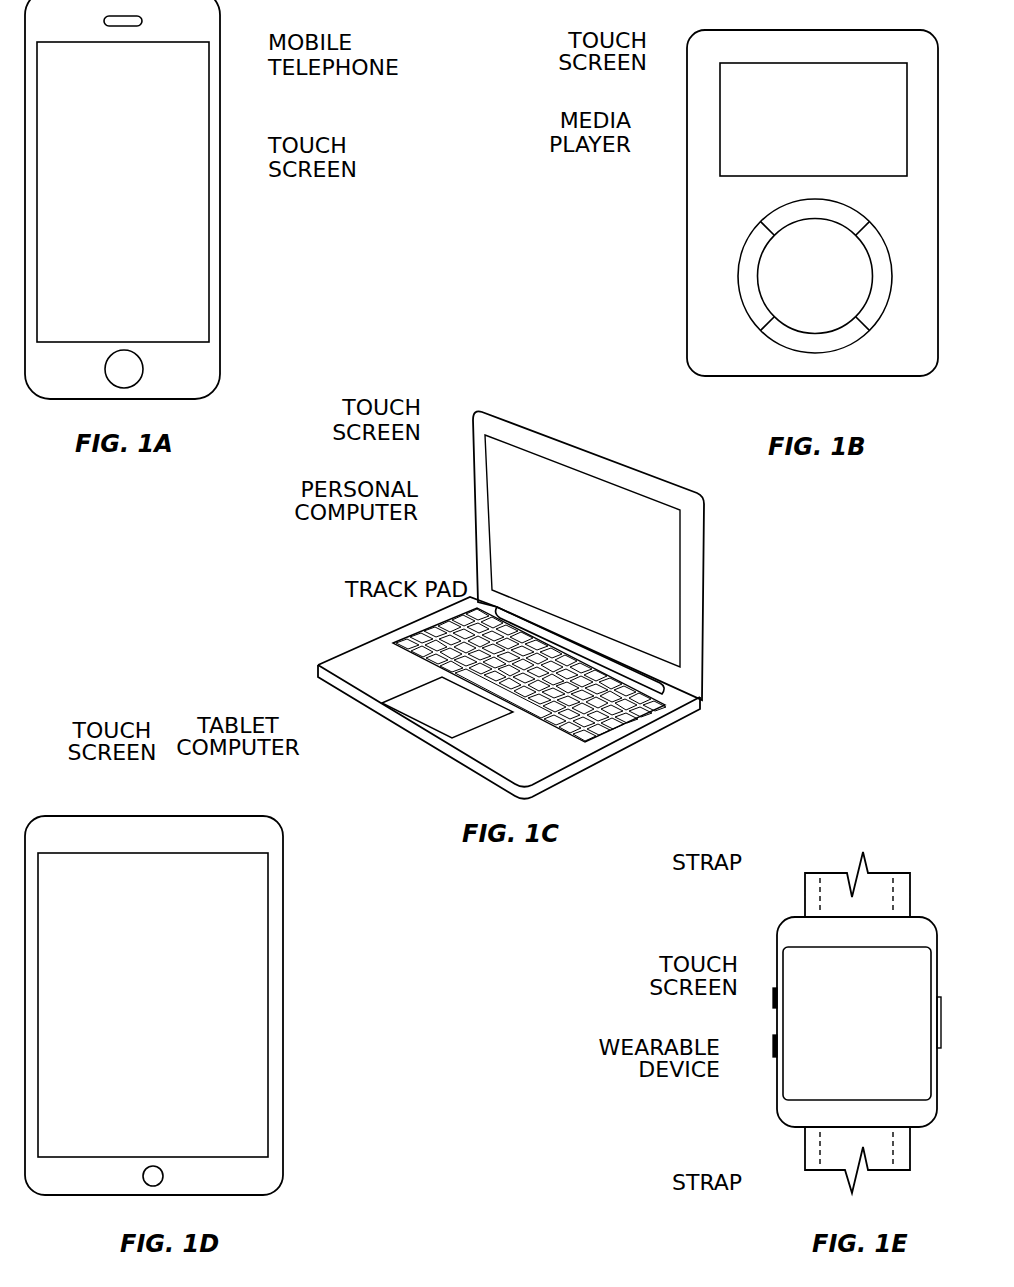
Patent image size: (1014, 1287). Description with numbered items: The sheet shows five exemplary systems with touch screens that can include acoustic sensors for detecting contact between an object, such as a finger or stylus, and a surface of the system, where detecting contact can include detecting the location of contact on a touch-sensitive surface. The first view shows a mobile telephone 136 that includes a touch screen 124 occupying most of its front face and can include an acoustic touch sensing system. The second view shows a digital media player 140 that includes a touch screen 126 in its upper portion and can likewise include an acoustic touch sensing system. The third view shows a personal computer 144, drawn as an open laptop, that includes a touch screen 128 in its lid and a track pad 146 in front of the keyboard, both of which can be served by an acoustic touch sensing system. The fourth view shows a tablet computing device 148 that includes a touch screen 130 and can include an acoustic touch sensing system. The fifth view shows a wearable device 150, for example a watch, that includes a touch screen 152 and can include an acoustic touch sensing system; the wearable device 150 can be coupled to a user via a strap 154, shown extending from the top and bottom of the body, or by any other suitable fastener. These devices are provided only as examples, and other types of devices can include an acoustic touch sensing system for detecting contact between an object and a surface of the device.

In FIG. 1A, the touch screen 124 is at (192, 207).
In FIG. 1B, the touch screen 126 is at (738, 107).
In FIG. 1C, the touch screen 128 is at (512, 470).
In FIG. 1D, the touch screen 130 is at (95, 866).
In FIG. 1A, the mobile telephone 136 is at (212, 102).
In FIG. 1B, the digital media player 140 is at (687, 180).
In FIG. 1C, the personal computer 144 is at (473, 548).
In FIG. 1C, the track pad 146 is at (425, 713).
In FIG. 1D, the tablet computing device 148 is at (231, 814).
In FIG. 1E, the wearable device 150 is at (777, 1080).
In FIG. 1E, the touch screen 152 is at (792, 1024).
In FIG. 1E, the strap 154 is at (805, 897).